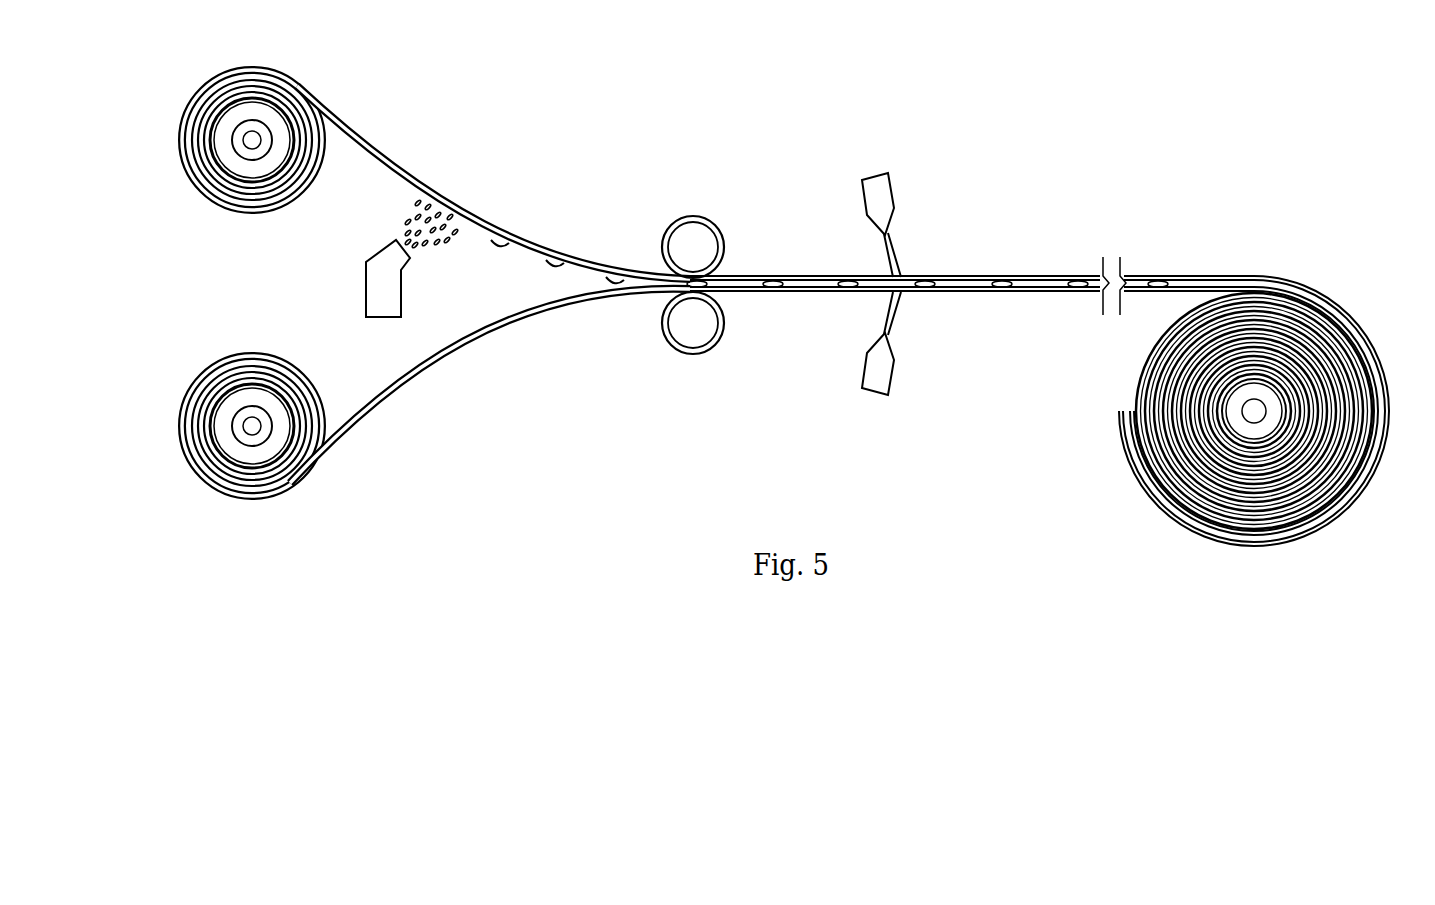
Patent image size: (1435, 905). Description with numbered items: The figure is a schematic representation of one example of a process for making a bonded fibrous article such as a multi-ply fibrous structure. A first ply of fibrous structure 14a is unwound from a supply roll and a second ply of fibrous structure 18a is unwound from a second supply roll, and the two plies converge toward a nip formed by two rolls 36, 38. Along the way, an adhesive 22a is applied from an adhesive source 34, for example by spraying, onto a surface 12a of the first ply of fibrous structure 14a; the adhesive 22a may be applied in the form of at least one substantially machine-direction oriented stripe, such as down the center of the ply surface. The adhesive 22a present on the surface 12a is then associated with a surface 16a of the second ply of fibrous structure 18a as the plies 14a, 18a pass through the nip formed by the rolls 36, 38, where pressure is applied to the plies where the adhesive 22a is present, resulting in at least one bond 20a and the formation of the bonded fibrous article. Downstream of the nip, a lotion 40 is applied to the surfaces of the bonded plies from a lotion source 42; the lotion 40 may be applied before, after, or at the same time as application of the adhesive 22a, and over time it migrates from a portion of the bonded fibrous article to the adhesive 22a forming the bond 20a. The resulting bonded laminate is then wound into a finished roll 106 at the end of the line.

The surface of the first ply of fibrous structure 12a is at (390, 180).
The first ply of fibrous structure 14a is at (382, 162).
The surface of the second ply of fibrous structure 16a is at (388, 389).
The second ply of fibrous structure 18a is at (380, 407).
The bond 20a is at (705, 282).
The adhesive 22a is at (422, 243).
The adhesive source 34 is at (382, 300).
The roll 36 is at (681, 259).
The roll 38 is at (681, 335).
The lotion 40 is at (990, 276).
The lotion source 42 is at (876, 190).
The wound laminate roll 106 is at (750, 291).